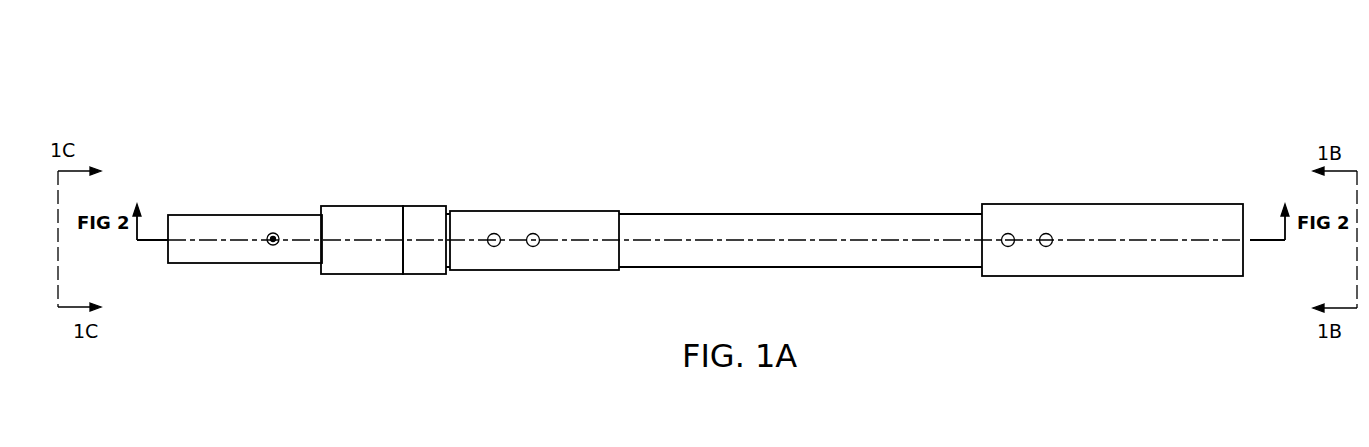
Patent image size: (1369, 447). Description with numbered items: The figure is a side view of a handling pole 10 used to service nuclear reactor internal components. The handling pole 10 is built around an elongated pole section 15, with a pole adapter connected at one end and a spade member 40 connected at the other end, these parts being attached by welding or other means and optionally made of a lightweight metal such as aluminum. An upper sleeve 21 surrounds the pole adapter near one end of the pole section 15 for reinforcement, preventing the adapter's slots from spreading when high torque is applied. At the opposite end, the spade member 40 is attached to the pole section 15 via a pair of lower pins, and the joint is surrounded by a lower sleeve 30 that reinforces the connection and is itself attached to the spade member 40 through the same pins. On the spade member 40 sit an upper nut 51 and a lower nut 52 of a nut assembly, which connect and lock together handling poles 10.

The handling pole 10 is at (639, 166).
The pole section 15 is at (759, 214).
The upper sleeve 21 is at (1105, 204).
The lower sleeve 30 is at (492, 211).
The spade member 40 is at (245, 215).
The upper nut 51 is at (425, 274).
The lower nut 52 is at (362, 274).